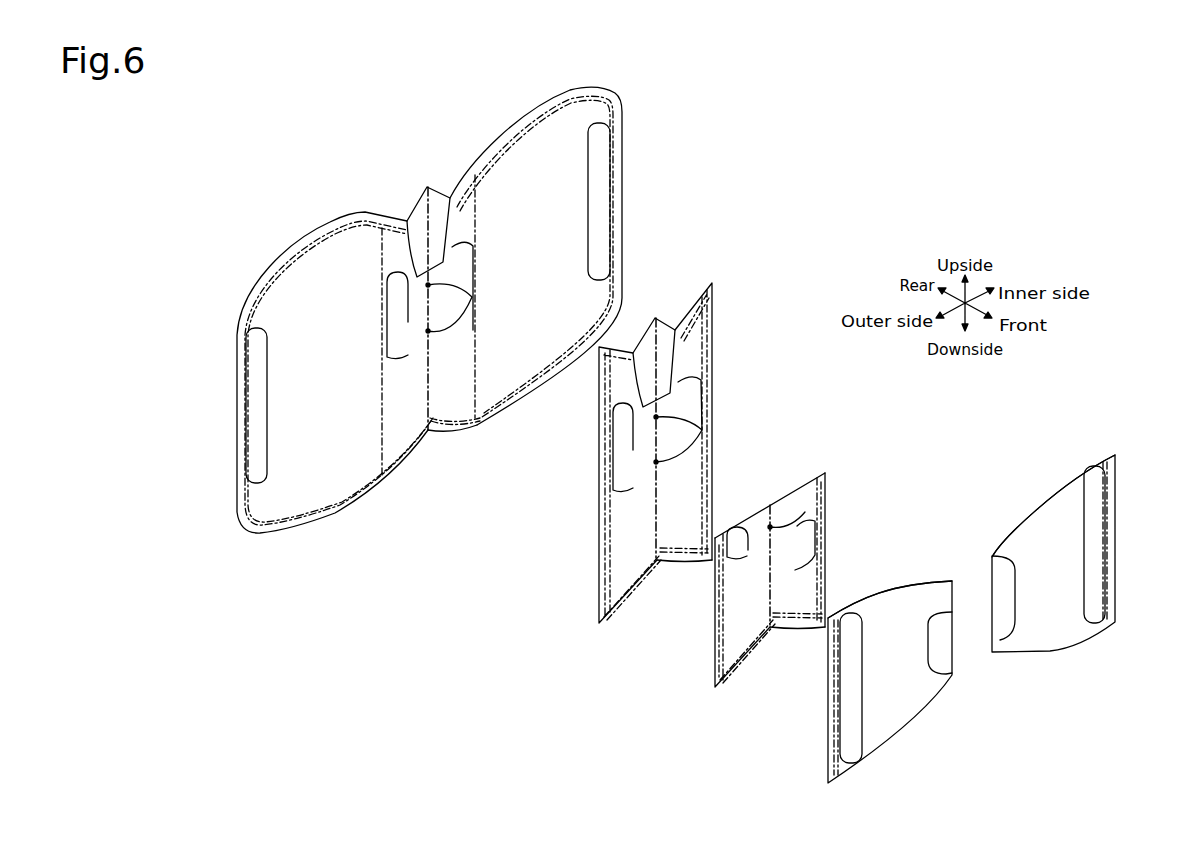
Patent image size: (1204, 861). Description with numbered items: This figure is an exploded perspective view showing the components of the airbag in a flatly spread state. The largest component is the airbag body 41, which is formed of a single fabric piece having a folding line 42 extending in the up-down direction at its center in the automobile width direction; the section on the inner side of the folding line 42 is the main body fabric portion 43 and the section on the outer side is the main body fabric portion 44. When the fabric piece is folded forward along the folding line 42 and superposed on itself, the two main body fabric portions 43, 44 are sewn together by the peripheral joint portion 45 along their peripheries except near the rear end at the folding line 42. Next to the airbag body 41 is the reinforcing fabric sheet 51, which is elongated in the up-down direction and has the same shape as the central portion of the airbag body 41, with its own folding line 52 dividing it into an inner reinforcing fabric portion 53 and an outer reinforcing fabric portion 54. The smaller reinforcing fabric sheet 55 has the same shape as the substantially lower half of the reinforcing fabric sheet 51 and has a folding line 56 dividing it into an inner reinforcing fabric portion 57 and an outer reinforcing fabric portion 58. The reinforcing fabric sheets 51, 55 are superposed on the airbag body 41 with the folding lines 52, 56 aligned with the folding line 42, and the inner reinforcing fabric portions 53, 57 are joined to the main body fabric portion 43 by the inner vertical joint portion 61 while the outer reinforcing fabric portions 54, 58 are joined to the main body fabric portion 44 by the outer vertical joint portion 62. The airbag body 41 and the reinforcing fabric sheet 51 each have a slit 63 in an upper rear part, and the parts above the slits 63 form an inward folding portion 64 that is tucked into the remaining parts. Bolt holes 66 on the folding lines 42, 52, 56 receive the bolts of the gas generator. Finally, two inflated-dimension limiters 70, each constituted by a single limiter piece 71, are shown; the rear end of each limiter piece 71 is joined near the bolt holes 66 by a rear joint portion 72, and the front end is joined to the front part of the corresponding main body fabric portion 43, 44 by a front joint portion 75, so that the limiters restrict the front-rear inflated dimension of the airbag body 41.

The airbag body 41 is at (429, 314).
The folding line 42 is at (442, 196).
The main body fabric portion 43 is at (453, 417).
The main body fabric portion 44 is at (410, 445).
The peripheral joint portion 45 is at (512, 128).
The reinforcing fabric sheet 51 is at (655, 465).
The folding line 52 is at (668, 318).
The reinforcing fabric portion 53 is at (690, 567).
The reinforcing fabric portion 54 is at (635, 578).
The reinforcing fabric sheet 55 is at (770, 579).
The folding line 56 is at (784, 512).
The reinforcing fabric portion 57 is at (806, 630).
The reinforcing fabric portion 58 is at (756, 640).
The vertical joint portion 61 is at (478, 338).
The vertical joint portion 62 is at (382, 404).
The slit 63 is at (420, 211).
The inward folding portion 64 is at (529, 257).
The bolt hole 66 is at (472, 297).
The inflated-dimension limiter 70 is at (971, 536).
The limiter piece 71 is at (892, 732).
The rear joint portion 72 is at (476, 258).
The front joint portion 75 is at (590, 235).